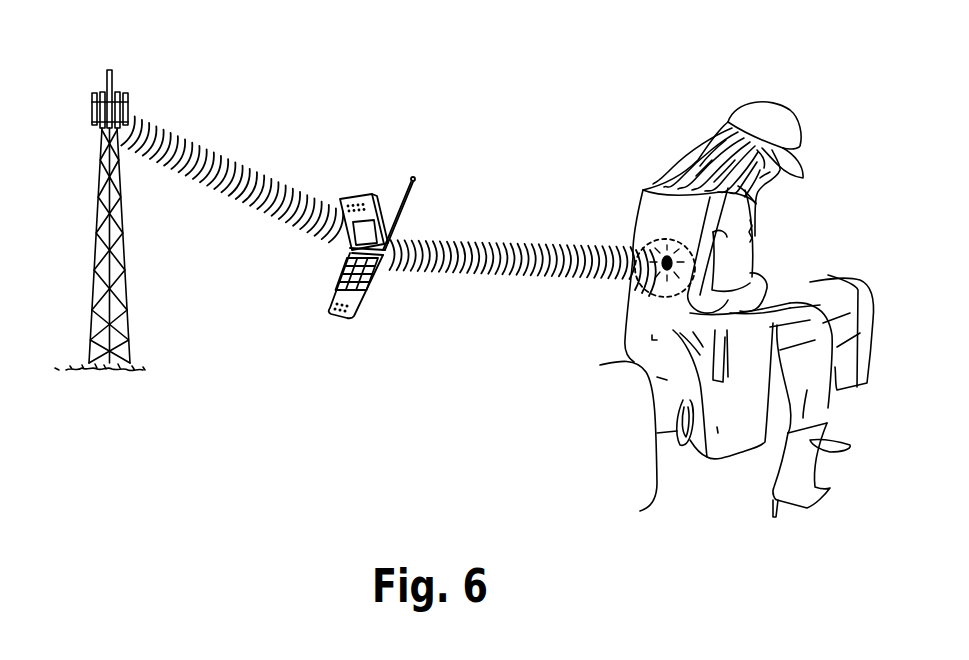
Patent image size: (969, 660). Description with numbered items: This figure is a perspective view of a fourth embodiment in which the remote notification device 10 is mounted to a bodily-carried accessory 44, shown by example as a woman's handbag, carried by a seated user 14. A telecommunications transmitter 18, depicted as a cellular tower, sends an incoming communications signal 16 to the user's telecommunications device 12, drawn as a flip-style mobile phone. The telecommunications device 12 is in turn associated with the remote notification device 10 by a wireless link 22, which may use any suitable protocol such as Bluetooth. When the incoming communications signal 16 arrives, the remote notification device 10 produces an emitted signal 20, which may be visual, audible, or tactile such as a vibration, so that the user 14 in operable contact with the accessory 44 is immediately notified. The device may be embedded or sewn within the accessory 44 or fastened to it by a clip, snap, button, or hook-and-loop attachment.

The remote notification device 10 is at (640, 280).
The telecommunications device 12 is at (359, 188).
The user 14 is at (652, 167).
The incoming communications signal 16 is at (206, 144).
The telecommunications transmitter 18 is at (100, 172).
The emitted signal 20 is at (631, 251).
The wireless link 22 is at (477, 239).
The bodily-carried accessory 44 is at (695, 298).